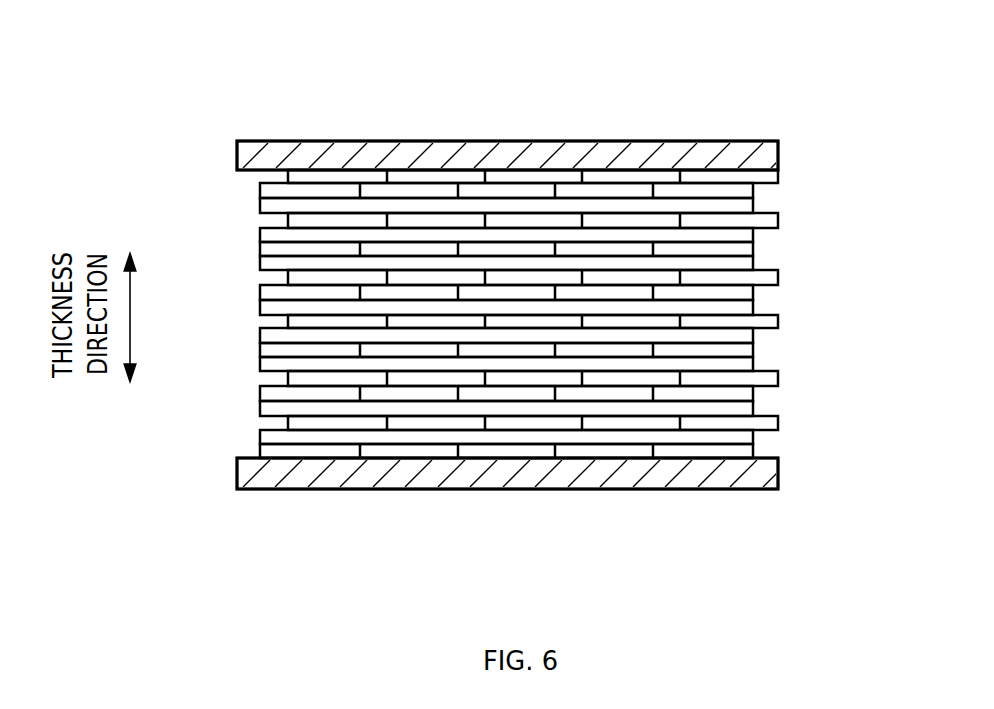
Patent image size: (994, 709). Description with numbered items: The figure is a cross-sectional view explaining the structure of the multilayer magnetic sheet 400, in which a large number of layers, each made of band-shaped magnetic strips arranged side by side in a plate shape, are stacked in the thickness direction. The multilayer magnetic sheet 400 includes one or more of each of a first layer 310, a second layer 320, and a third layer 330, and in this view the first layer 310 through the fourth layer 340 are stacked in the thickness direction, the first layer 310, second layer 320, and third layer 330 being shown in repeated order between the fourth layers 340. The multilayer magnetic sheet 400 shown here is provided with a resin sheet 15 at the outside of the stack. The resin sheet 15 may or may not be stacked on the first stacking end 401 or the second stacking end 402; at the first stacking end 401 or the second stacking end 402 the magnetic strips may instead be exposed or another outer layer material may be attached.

The multilayer magnetic sheet 400 is at (824, 89).
The second stacking end 402 is at (528, 168).
The first stacking end 401 is at (522, 490).
The resin sheet 15 is at (342, 140).
The fourth layer 340 is at (780, 218).
The third layer 330 is at (753, 233).
The second layer 320 is at (753, 247).
The first layer 310 is at (753, 260).